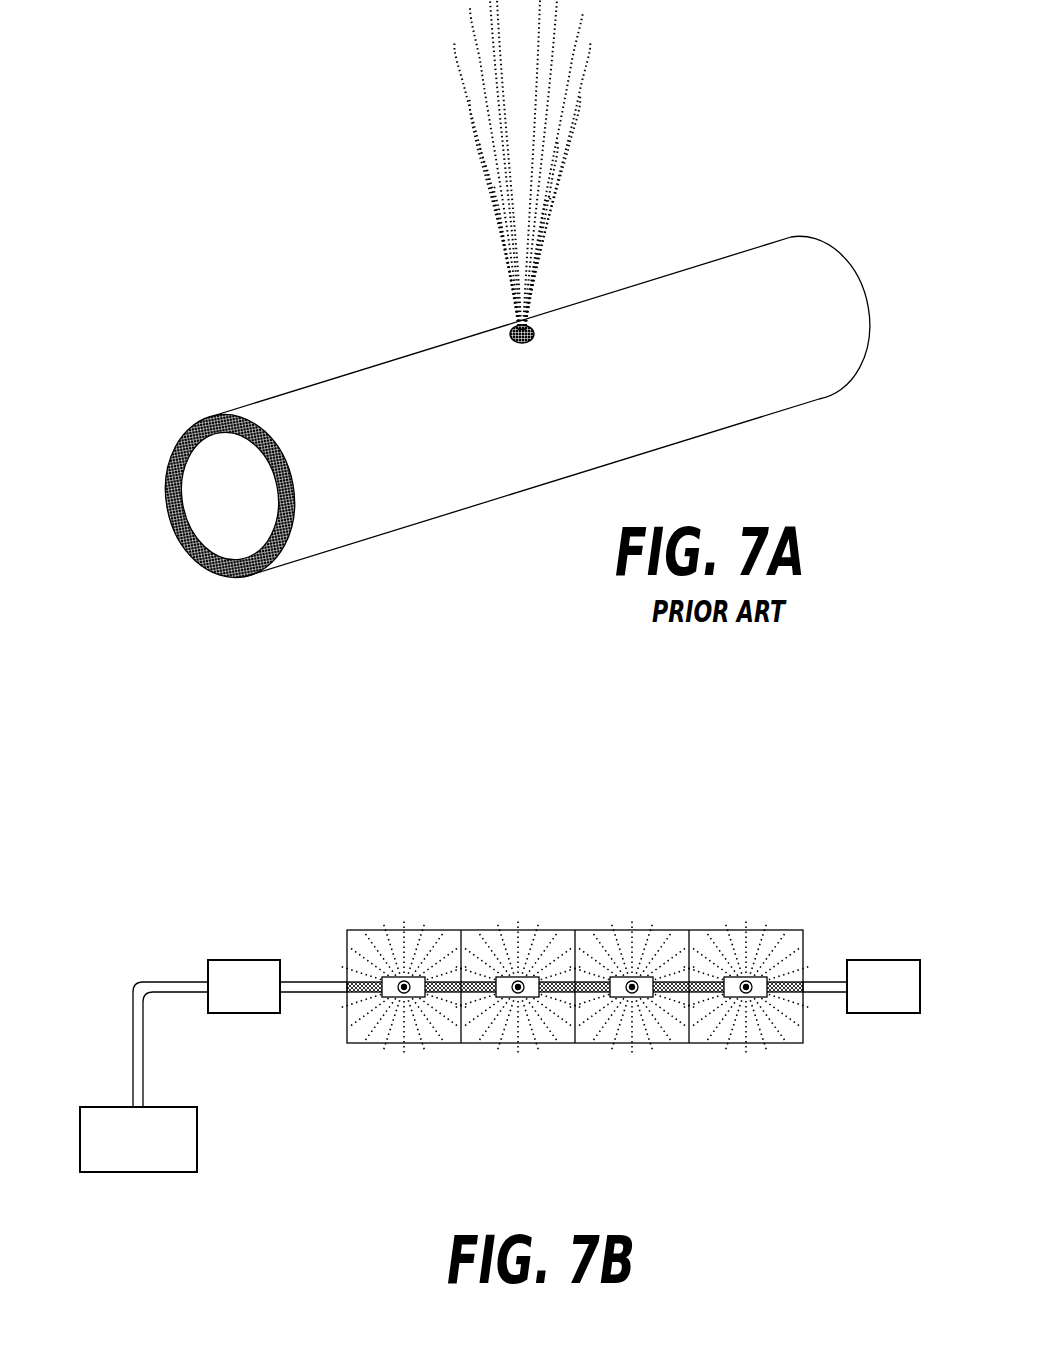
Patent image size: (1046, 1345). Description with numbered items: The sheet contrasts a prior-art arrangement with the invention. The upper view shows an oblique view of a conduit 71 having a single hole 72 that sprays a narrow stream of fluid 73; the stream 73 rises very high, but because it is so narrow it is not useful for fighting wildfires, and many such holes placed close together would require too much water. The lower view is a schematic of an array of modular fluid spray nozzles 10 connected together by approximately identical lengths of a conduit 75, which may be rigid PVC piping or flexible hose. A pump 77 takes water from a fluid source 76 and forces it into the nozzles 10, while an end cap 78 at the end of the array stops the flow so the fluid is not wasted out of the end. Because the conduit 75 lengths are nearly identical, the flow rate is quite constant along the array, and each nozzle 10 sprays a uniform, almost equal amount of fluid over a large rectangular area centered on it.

In FIG. 7A, the conduit 71 is at (378, 398).
In FIG. 7A, the hole 72 is at (535, 335).
In FIG. 7A, the stream of fluid 73 is at (598, 101).
In FIG. 7B, the conduit 75 is at (327, 984).
In FIG. 7B, the modular fluid spray nozzle 10 is at (404, 997).
In FIG. 7B, the fluid source 76 is at (155, 1156).
In FIG. 7B, the pump 77 is at (261, 1004).
In FIG. 7B, the end cap 78 is at (900, 1004).